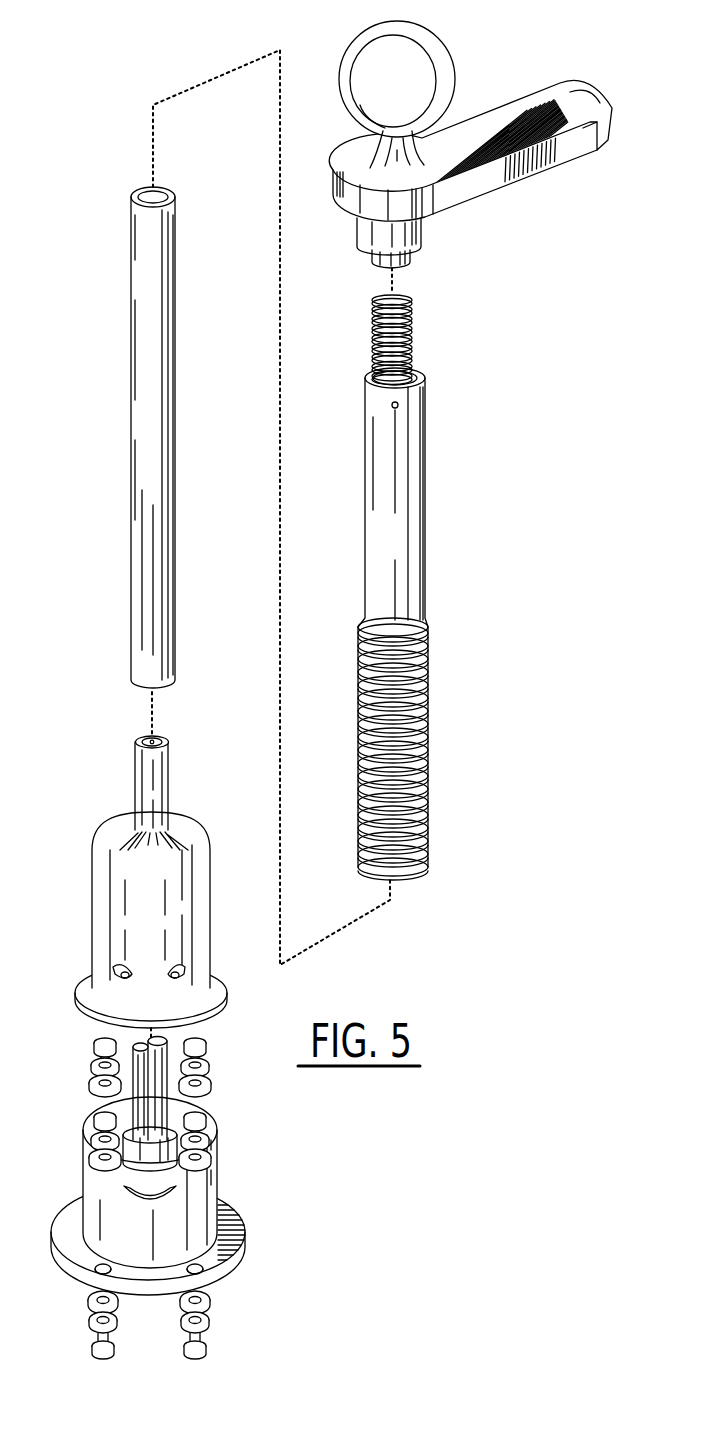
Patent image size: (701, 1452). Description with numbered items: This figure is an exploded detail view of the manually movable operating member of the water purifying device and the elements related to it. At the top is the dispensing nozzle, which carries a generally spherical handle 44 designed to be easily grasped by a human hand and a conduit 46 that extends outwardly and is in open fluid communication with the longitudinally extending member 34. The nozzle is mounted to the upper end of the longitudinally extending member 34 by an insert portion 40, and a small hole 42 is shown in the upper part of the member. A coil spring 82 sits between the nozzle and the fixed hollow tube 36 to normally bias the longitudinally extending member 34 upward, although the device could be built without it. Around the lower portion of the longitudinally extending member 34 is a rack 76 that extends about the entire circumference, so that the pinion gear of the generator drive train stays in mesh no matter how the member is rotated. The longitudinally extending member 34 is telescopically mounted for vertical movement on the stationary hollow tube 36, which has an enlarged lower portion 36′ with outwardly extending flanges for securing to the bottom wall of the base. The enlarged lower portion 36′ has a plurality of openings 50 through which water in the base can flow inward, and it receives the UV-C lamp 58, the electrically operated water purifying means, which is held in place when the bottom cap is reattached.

The longitudinally extending hollow tubular member 34 is at (432, 497).
The hollow tube 36 is at (143, 448).
The enlarged lower portion 36′ is at (118, 882).
The insert portion 40 is at (413, 231).
The hole 42 is at (400, 404).
The generally spherical handle 44 is at (395, 67).
The conduit 46 is at (550, 107).
The openings 50 is at (124, 982).
The UV-C lamp 58 is at (130, 1093).
The rack 76 is at (422, 747).
The coil spring 82 is at (413, 323).